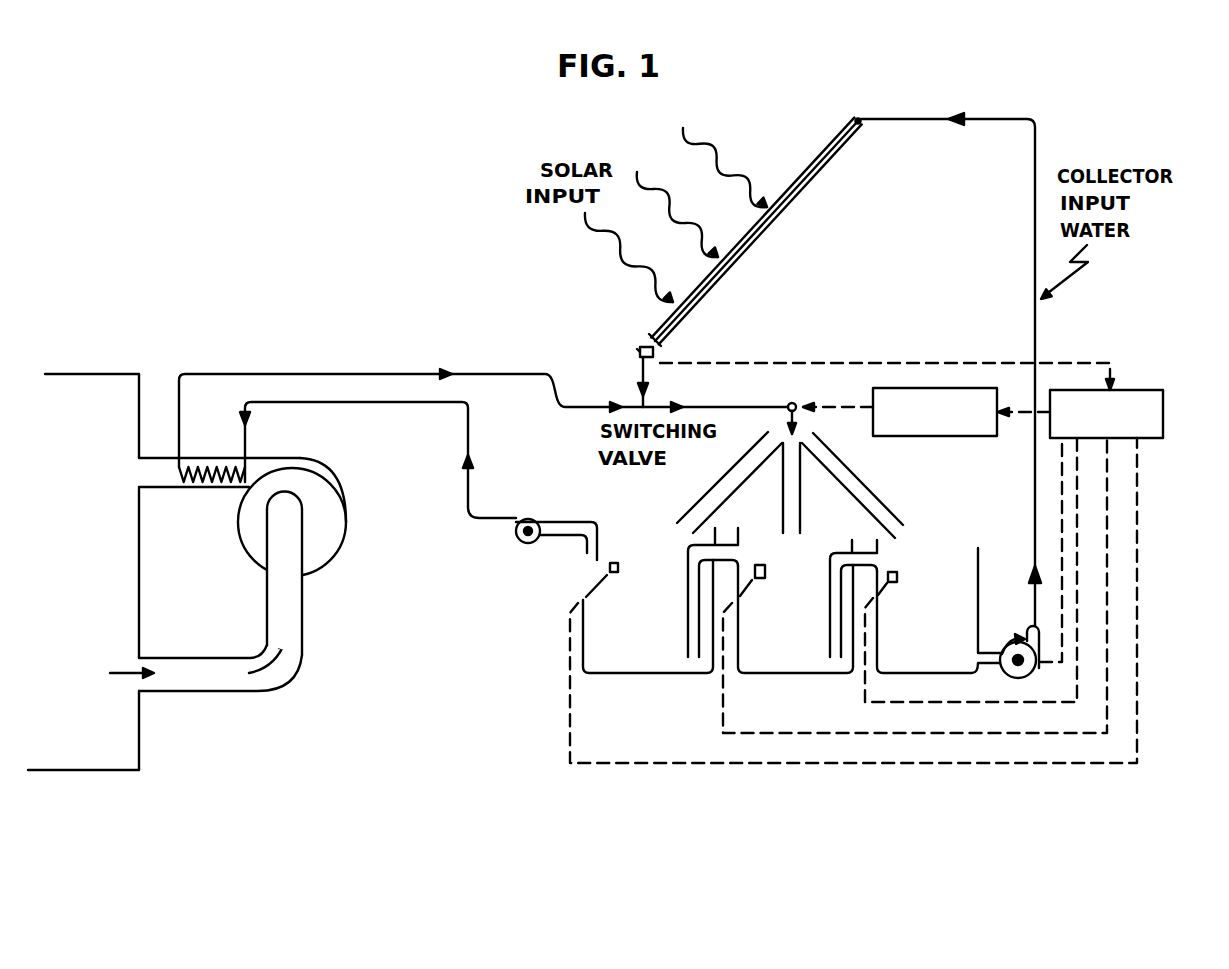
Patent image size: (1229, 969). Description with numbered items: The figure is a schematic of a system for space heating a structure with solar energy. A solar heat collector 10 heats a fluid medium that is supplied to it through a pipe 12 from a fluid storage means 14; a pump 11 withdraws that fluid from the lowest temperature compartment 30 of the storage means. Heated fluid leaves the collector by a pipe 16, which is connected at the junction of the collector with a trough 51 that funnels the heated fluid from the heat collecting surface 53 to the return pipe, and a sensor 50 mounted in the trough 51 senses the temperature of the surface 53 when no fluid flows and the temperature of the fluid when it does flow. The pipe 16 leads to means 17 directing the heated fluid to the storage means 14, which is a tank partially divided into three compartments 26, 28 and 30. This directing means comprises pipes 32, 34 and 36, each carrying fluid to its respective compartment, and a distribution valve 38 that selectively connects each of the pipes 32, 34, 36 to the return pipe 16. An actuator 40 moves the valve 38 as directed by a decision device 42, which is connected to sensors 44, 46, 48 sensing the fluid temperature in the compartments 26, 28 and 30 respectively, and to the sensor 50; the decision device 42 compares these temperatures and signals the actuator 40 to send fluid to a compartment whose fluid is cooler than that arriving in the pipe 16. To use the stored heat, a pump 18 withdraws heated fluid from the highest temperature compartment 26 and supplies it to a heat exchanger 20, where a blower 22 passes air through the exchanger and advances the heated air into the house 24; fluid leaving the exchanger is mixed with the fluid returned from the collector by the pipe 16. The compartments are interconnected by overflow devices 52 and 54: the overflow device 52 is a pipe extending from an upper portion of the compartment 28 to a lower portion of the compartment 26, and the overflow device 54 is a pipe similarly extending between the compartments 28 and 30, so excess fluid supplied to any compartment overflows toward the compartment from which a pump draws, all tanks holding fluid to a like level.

The solar heat collector 10 is at (756, 231).
The pump 11 is at (1020, 638).
The pipe 12 is at (895, 120).
The fluid storage means 14 is at (791, 593).
The pipe 16 is at (645, 380).
The means directing the heated fluid 17 is at (843, 456).
The pump 18 is at (545, 513).
The heat exchanger 20 is at (224, 464).
The blower 22 is at (321, 494).
The house 24 is at (92, 388).
The compartment 26 is at (660, 662).
The compartment 28 is at (800, 662).
The compartment 30 is at (937, 662).
The pipe 32 is at (710, 491).
The pipe 34 is at (793, 506).
The pipe 36 is at (853, 494).
The distribution valve 38 is at (802, 424).
The actuator 40 is at (943, 436).
The decision device 42 is at (1165, 416).
The sensor 44 is at (618, 568).
The sensor 46 is at (773, 563).
The sensor 48 is at (897, 572).
The sensor 50 is at (663, 352).
The trough 51 is at (637, 351).
The overflow device 52 is at (703, 550).
The heat collecting surface 53 is at (663, 324).
The overflow device 54 is at (843, 556).